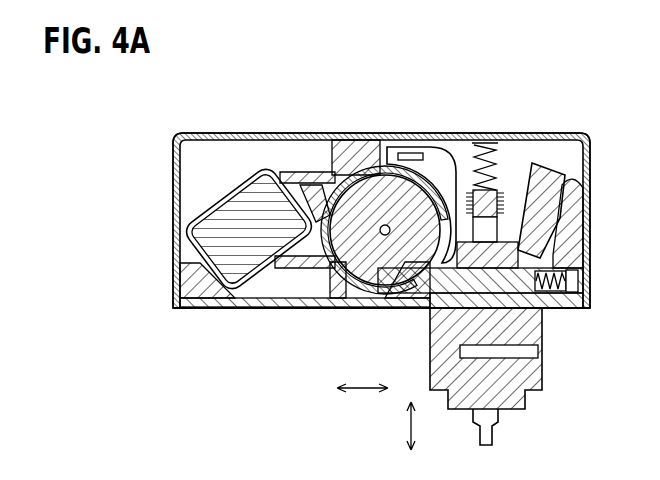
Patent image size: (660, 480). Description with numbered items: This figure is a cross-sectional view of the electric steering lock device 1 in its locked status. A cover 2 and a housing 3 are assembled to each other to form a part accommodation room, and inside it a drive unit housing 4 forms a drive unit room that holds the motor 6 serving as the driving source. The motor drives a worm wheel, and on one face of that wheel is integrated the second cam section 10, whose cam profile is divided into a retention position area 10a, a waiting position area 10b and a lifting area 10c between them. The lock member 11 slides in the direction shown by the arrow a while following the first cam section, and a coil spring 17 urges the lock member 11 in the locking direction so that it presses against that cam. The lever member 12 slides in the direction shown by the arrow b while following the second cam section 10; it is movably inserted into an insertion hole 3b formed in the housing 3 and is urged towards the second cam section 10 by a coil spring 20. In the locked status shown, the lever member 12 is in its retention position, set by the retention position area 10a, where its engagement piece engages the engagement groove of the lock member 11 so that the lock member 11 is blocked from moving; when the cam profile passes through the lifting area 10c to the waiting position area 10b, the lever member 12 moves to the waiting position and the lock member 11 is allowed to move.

The electric steering lock device 1 is at (167, 168).
The cover 2 is at (173, 192).
The housing 3 is at (238, 305).
The insertion hole 3b is at (545, 313).
The drive unit housing 4 is at (187, 287).
The motor 6 is at (205, 238).
The second cam section 10 is at (384, 223).
The retention position area 10a is at (427, 293).
The waiting position area 10b is at (379, 150).
The lifting area 10c is at (385, 300).
The lock member 11 is at (513, 183).
The lever member 12 is at (548, 340).
The coil spring 17 is at (463, 163).
The coil spring 20 is at (582, 273).
The arrow a is at (415, 425).
The arrow b is at (355, 392).